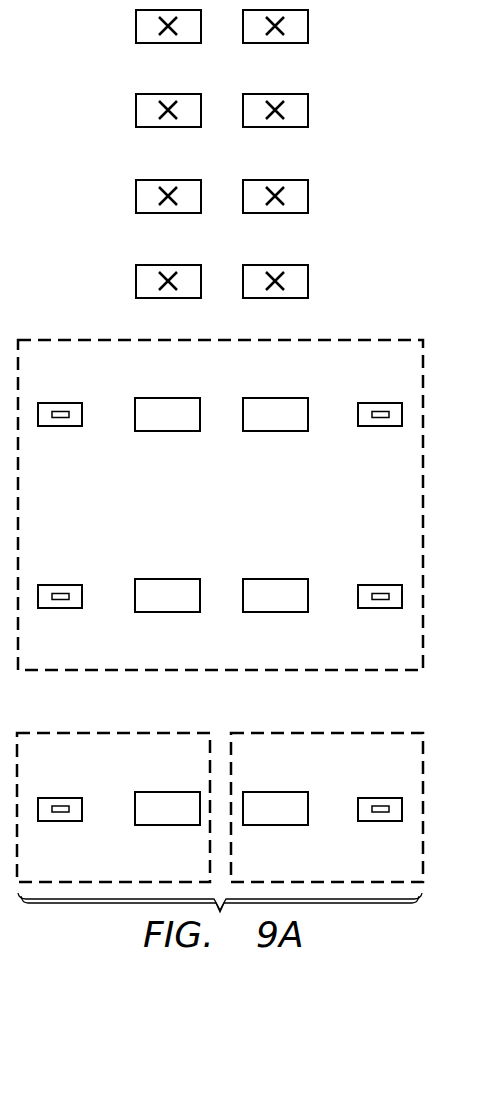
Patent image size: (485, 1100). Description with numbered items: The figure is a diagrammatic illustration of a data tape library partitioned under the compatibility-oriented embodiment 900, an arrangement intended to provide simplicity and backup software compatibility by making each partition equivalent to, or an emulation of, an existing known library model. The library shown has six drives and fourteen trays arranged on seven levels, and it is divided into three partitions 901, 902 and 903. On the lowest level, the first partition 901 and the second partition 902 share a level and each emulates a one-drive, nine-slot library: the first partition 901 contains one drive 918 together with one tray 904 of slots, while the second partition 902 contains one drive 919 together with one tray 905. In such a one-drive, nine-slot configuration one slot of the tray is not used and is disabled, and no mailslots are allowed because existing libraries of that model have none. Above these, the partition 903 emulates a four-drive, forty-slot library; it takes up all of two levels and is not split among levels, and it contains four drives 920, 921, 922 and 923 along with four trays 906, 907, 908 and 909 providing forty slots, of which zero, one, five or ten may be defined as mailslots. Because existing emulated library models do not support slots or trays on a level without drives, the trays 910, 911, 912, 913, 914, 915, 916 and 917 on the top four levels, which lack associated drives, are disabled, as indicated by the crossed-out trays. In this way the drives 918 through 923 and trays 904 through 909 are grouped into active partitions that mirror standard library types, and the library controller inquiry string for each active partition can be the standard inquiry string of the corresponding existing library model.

The compatibility-oriented embodiment 900 is at (89, 924).
The first partition 901 is at (102, 732).
The second partition 902 is at (337, 732).
The 4/40 partition 903 is at (220, 670).
The tray 904 is at (165, 825).
The tray 905 is at (275, 825).
The tray 906 is at (168, 578).
The tray 907 is at (275, 578).
The tray 908 is at (168, 431).
The tray 909 is at (275, 431).
The disabled tray 910 is at (136, 280).
The disabled tray 911 is at (308, 280).
The disabled tray 912 is at (136, 195).
The disabled tray 913 is at (308, 195).
The disabled tray 914 is at (136, 109).
The disabled tray 915 is at (308, 109).
The disabled tray 916 is at (136, 25).
The disabled tray 917 is at (308, 25).
The drive 918 is at (59, 821).
The drive 919 is at (380, 821).
The drive 920 is at (59, 608).
The drive 921 is at (378, 608).
The drive 922 is at (60, 402).
The drive 923 is at (380, 402).